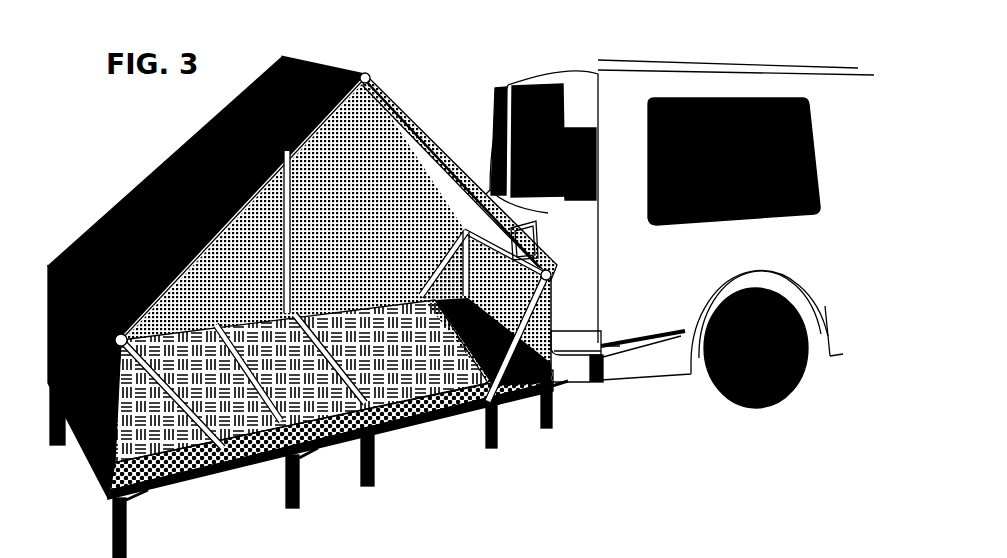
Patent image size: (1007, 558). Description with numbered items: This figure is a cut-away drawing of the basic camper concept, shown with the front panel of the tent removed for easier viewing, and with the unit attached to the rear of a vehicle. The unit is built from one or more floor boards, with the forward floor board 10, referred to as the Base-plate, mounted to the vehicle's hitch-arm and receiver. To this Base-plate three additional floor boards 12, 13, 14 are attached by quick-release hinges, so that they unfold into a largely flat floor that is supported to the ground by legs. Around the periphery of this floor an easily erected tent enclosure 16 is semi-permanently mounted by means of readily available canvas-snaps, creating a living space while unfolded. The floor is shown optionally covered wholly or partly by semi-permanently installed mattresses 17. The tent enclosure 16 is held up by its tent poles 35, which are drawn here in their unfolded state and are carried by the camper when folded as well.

The forward floor board 10 is at (512, 385).
The floor board 12 is at (420, 408).
The floor board 13 is at (318, 441).
The floor board 14 is at (247, 462).
The tent enclosure 16 is at (390, 104).
The mattresses 17 is at (437, 403).
The tent poles 35 is at (360, 63).